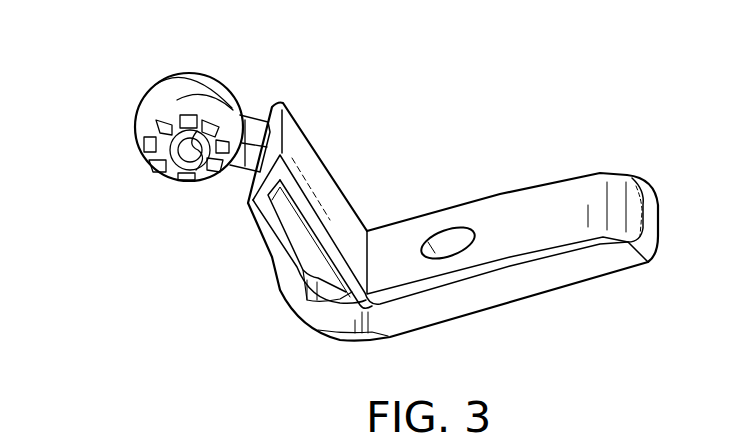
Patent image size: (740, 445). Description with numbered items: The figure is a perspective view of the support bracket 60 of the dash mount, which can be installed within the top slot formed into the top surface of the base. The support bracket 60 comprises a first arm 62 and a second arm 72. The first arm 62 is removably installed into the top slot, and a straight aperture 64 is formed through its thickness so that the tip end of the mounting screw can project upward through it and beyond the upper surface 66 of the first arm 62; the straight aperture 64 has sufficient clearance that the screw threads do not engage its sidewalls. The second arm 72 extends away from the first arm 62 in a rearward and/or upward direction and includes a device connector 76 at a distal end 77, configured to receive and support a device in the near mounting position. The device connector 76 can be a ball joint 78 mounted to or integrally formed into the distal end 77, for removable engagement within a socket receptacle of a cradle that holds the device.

The support bracket 60 is at (481, 133).
The first arm 62 is at (546, 274).
The straight aperture 64 is at (456, 240).
The upper surface 66 is at (541, 201).
The second arm 72 is at (271, 258).
The device connector 76 is at (138, 169).
The distal end 77 is at (162, 124).
The ball joint 78 is at (135, 130).